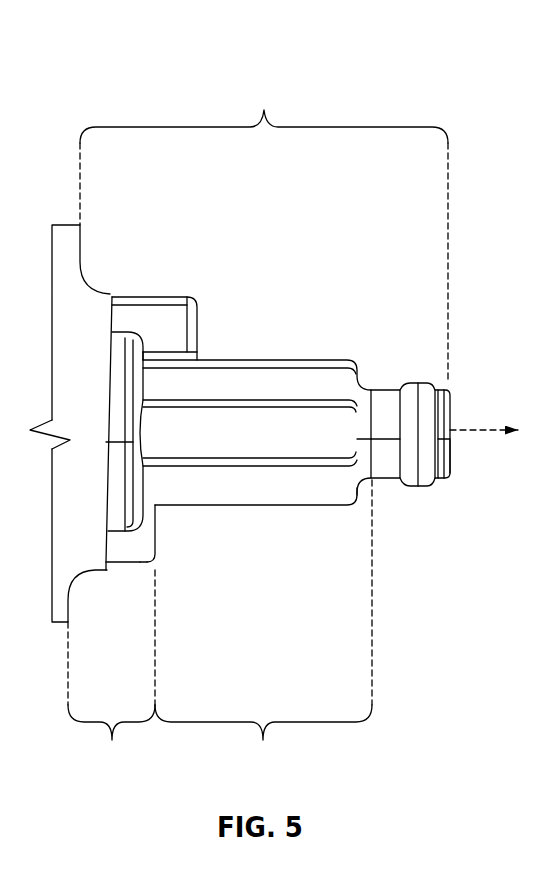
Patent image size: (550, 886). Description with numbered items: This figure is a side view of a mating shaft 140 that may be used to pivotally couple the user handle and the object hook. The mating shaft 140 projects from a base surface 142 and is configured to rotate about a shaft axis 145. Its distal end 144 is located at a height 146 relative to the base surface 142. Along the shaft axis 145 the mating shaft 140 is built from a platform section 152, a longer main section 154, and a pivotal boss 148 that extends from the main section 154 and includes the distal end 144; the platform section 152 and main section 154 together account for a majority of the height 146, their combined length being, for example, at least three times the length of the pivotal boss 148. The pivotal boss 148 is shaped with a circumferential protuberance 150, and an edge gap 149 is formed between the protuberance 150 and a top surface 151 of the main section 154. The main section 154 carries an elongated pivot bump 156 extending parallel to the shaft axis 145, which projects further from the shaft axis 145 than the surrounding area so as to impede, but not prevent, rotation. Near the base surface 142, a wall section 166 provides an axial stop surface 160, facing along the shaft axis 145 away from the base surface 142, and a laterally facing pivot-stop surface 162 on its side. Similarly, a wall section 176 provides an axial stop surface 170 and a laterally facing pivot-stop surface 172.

The mating shaft 140 is at (147, 57).
The base surface 142 is at (72, 600).
The distal end 144 is at (452, 403).
The shaft axis 145 is at (504, 428).
The height 146 is at (264, 231).
The pivotal boss 148 is at (455, 474).
The edge gap 149 is at (385, 385).
The circumferential protuberance 150 is at (403, 484).
The top surface 151 is at (362, 500).
The platform section 152 is at (111, 672).
The main section 154 is at (263, 627).
The pivot bump 156 is at (258, 438).
The axial stop surface 160 is at (199, 325).
The pivot-stop surface 162 is at (167, 322).
The wall section 166 is at (140, 325).
The axial stop surface 170 is at (158, 537).
The pivot-stop surface 172 is at (118, 556).
The wall section 176 is at (148, 567).